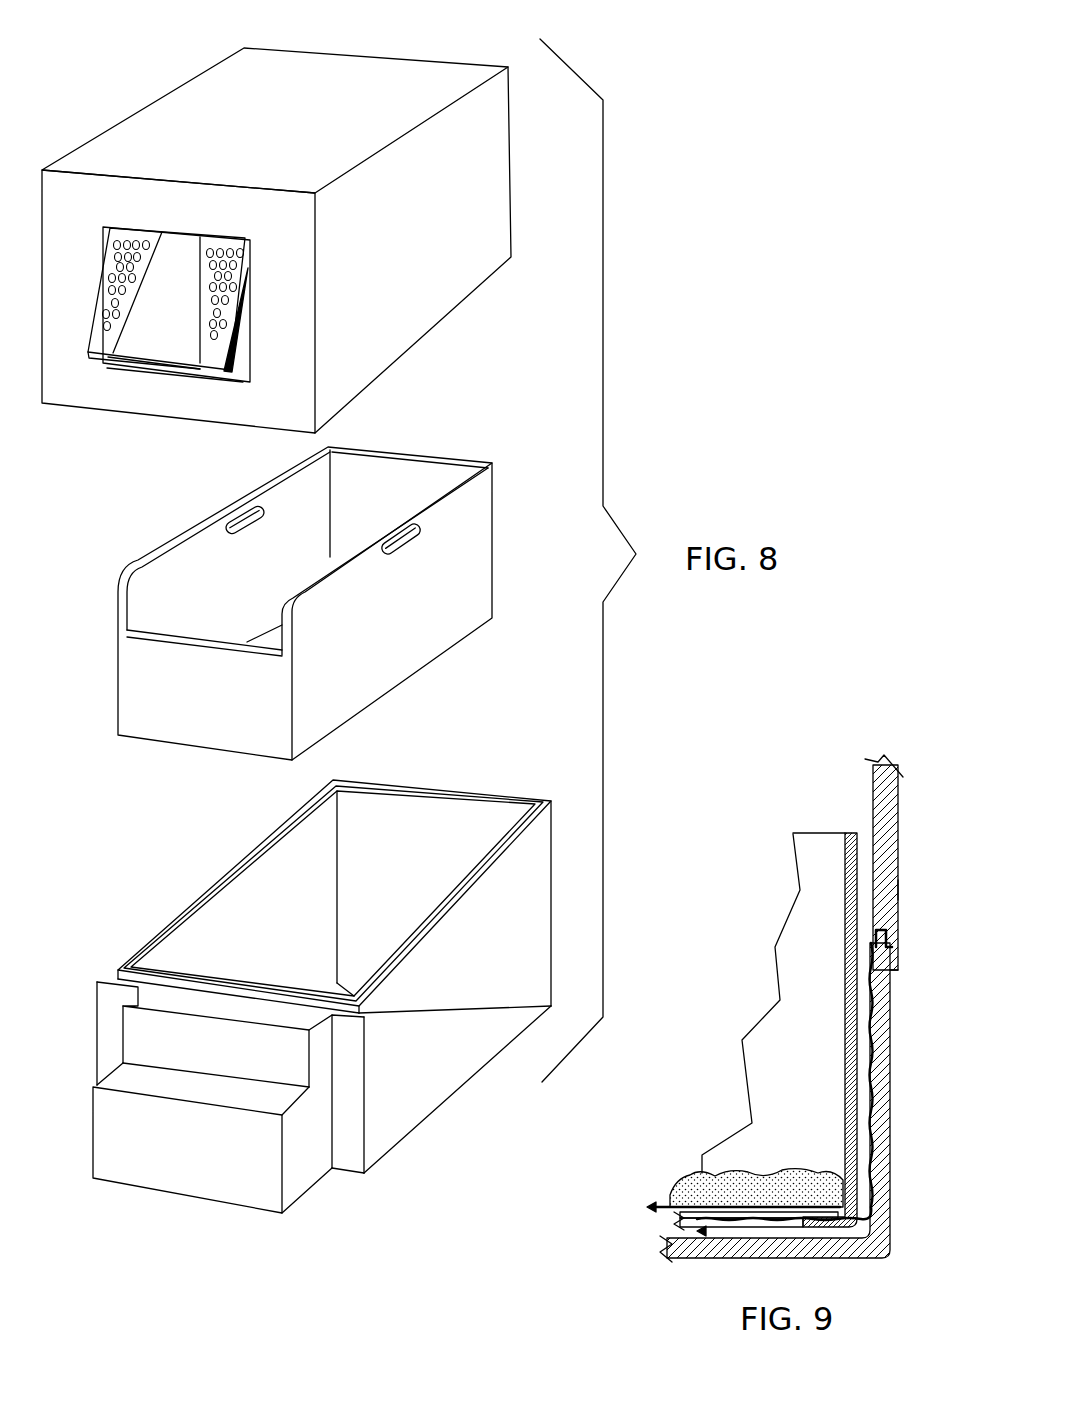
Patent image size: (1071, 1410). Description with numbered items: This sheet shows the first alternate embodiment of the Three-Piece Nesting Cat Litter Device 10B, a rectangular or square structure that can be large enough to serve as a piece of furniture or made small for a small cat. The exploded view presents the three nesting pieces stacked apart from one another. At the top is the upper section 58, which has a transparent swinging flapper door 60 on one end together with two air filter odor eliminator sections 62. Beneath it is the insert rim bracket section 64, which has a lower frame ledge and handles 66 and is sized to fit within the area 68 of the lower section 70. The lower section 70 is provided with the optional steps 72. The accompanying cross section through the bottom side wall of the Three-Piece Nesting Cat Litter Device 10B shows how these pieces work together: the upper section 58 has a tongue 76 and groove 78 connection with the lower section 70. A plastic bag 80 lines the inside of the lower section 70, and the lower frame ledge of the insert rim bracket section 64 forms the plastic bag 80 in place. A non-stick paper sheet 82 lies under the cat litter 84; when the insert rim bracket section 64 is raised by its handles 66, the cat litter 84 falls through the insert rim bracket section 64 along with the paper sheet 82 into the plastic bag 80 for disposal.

In FIG. 8, the Three-Piece Nesting Cat Litter Device 10B is at (138, 56).
In FIG. 8, the upper section 58 is at (413, 282).
In FIG. 9, the upper section 58 is at (898, 813).
In FIG. 8, the transparent swinging flapper door 60 is at (182, 338).
In FIG. 8, the air filter odor eliminator sections 62 is at (112, 302).
In FIG. 8, the insert rim bracket section 64 is at (418, 625).
In FIG. 9, the insert rim bracket section 64 is at (843, 912).
In FIG. 8, the handles 66 is at (410, 545).
In FIG. 8, the area 68 is at (262, 914).
In FIG. 8, the lower section 70 is at (431, 1044).
In FIG. 9, the lower section 70 is at (893, 1120).
In FIG. 8, the steps 72 is at (198, 1145).
In FIG. 9, the tongue 76 is at (898, 891).
In FIG. 9, the groove 78 is at (888, 943).
In FIG. 9, the plastic bag 80 is at (893, 1235).
In FIG. 9, the non-stick paper sheet 82 is at (662, 1203).
In FIG. 9, the cat litter 84 is at (752, 1185).